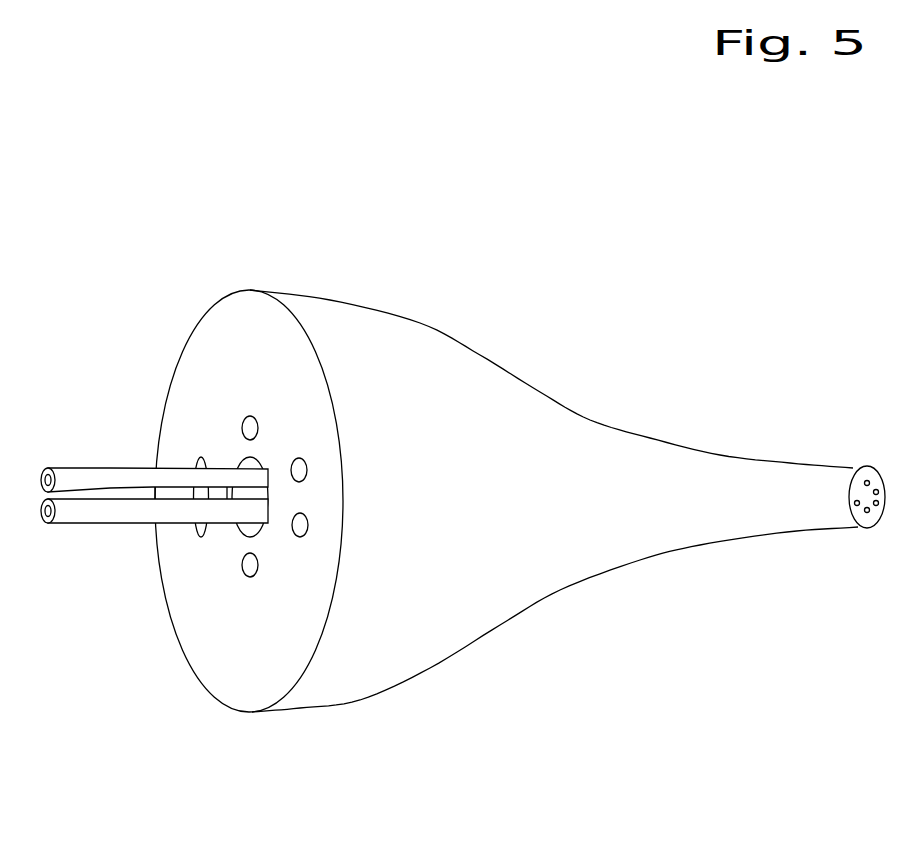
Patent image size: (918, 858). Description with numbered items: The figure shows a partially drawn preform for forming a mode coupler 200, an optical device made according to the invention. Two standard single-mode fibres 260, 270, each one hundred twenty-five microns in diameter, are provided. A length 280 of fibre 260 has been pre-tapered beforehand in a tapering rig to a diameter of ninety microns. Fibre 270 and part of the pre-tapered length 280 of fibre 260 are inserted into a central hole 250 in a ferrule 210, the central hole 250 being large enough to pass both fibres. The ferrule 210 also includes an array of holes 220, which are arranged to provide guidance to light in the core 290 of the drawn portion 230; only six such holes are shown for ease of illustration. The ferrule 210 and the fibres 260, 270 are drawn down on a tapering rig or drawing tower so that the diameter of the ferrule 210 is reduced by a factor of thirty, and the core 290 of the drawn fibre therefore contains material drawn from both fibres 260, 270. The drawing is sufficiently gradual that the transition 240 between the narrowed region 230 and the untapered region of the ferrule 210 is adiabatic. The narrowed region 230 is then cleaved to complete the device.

The mode coupler 200 is at (253, 212).
The ferrule 210 is at (310, 717).
The array of holes 220 is at (858, 492).
The drawn portion 230 is at (808, 442).
The transition 240 is at (572, 388).
The central hole 250 is at (262, 465).
The single-mode fibre 260 is at (65, 467).
The single-mode fibre 270 is at (75, 525).
The pre-tapered length 280 is at (145, 470).
The core 290 is at (870, 492).